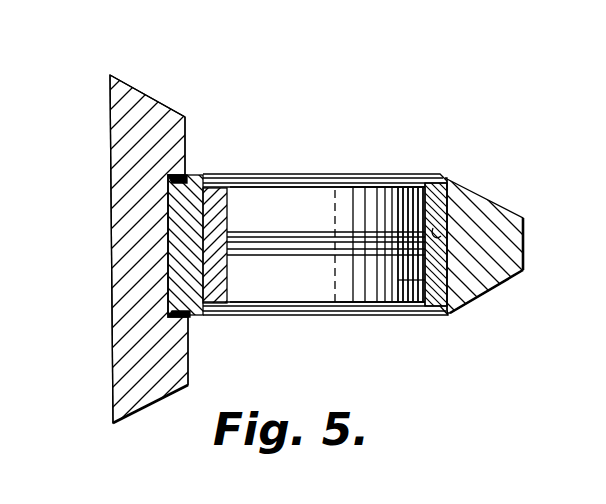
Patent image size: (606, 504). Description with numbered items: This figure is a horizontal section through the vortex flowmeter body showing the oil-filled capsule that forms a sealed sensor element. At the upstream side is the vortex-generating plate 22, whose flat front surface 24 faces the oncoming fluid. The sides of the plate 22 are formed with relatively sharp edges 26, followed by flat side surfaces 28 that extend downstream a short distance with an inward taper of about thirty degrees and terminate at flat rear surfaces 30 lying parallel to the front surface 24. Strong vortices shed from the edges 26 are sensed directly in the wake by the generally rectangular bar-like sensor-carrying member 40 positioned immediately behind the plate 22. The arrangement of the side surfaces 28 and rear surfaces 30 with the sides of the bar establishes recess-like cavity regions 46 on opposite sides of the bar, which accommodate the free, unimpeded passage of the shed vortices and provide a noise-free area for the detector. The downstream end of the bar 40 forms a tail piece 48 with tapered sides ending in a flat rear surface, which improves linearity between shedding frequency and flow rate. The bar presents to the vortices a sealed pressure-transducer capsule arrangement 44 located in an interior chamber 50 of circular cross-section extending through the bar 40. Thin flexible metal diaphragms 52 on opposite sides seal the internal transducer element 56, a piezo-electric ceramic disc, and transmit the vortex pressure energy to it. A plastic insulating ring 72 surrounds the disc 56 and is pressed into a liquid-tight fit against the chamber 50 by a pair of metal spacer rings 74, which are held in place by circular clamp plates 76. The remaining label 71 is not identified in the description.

The vortex-generating plate 22 is at (132, 317).
The flat front surface 24 is at (110, 203).
The sharp edges 26 is at (110, 75).
The flat side surfaces 28 is at (147, 95).
The flat rear surfaces 30 is at (187, 132).
The sensor-carrying member 40 is at (405, 163).
The pressure-transducer capsule arrangement 44 is at (327, 165).
The cavity regions 46 is at (210, 163).
The tail piece 48 is at (497, 187).
The interior chamber 50 is at (437, 285).
The flexible circular metal diaphragms 52 is at (283, 175).
The transducer element 56 is at (323, 252).
The thread end 71 is at (402, 285).
The plastic insulating ring 72 is at (440, 235).
The metal spacer rings 74 is at (365, 203).
The circular clamp plates 76 is at (343, 187).